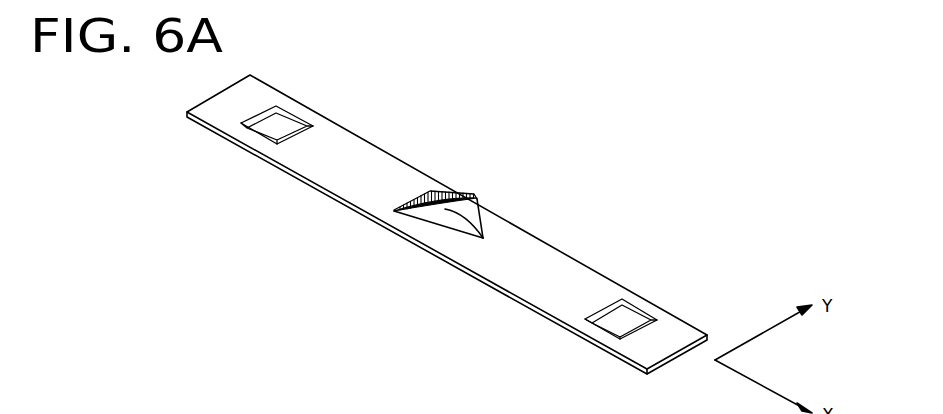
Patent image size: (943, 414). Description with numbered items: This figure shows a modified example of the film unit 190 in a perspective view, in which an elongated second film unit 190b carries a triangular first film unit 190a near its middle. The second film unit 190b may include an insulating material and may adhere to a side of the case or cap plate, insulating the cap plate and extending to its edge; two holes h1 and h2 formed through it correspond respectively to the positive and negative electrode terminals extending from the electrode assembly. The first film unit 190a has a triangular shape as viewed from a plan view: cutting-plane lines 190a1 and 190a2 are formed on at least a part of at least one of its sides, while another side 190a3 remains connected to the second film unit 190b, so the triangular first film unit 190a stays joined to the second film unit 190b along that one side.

The film unit 190 is at (467, 211).
The second film unit 190b is at (370, 157).
The first film unit 190a is at (419, 204).
The cutting-plane line 190a1 is at (447, 208).
The cutting-plane line 190a2 is at (463, 192).
The another side of the first film unit 190a3 is at (424, 193).
The hole h1 is at (286, 125).
The hole h2 is at (631, 317).